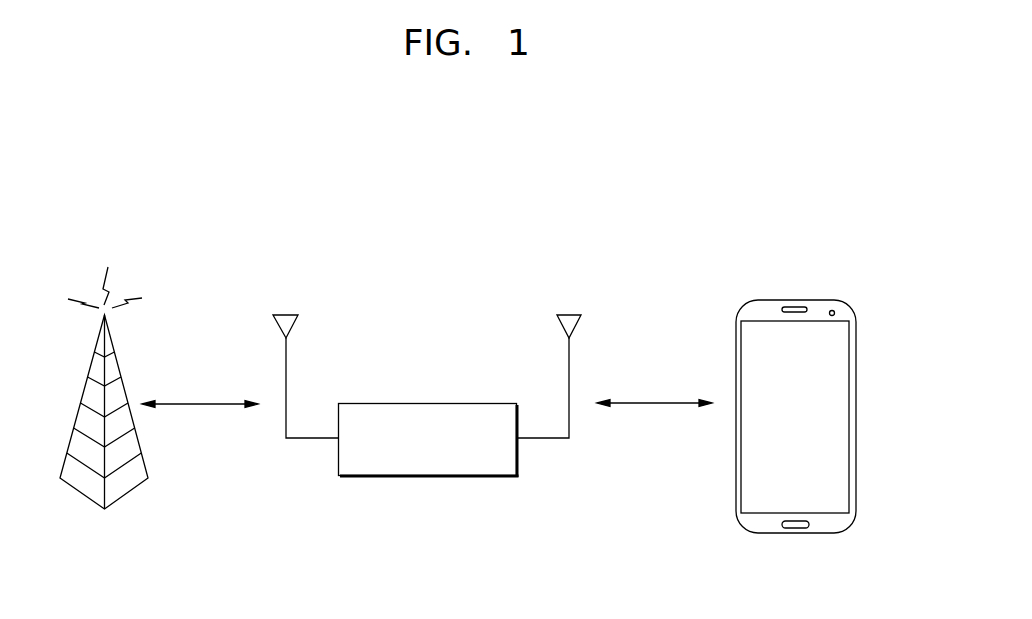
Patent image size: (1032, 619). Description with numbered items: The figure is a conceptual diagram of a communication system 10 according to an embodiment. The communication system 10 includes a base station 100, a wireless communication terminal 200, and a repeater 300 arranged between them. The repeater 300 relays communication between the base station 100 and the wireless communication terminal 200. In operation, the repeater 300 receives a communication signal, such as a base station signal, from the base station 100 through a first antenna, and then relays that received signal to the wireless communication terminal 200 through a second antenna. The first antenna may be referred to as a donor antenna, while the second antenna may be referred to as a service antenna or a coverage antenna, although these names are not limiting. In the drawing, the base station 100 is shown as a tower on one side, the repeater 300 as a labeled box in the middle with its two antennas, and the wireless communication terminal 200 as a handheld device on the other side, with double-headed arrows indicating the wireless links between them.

The communication system 10 is at (730, 219).
The base station 100 is at (119, 363).
The wireless communication terminal 200 is at (815, 298).
The repeater 300 is at (440, 403).